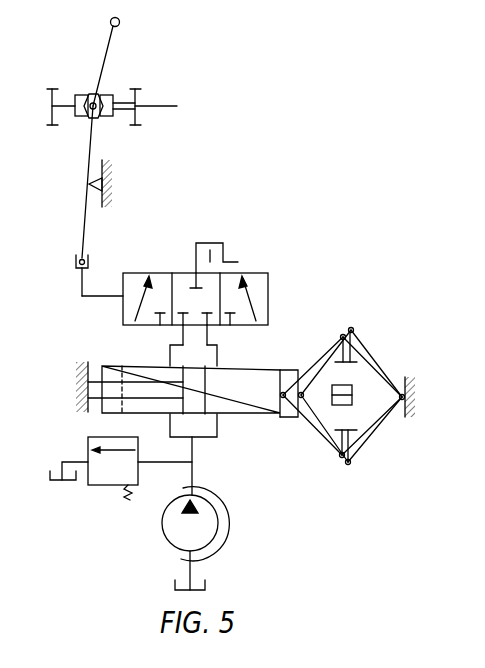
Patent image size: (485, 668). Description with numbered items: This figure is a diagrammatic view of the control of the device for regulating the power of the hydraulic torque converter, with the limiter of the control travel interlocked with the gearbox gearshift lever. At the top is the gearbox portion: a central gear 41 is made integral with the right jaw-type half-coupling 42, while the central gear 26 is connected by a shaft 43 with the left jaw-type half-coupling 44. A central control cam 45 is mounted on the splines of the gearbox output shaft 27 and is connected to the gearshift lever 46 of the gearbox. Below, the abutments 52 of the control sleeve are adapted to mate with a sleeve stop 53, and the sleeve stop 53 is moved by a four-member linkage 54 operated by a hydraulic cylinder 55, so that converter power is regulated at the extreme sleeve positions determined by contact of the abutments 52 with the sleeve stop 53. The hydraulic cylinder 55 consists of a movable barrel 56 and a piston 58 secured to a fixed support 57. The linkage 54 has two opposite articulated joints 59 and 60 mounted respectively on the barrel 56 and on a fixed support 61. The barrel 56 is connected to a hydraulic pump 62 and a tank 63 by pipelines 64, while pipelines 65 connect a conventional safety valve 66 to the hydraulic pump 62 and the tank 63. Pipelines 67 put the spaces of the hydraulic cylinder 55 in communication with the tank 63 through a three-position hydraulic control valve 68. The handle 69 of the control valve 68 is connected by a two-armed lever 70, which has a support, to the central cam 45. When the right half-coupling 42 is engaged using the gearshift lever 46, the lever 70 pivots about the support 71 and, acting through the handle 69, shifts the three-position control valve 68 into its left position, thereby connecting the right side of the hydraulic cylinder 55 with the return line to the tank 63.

The central gear 26 is at (52, 127).
The gearbox output shaft 27 is at (150, 104).
The central gear 41 is at (140, 120).
The jaw-type half-coupling 42 is at (107, 117).
The shaft 43 is at (58, 100).
The jaw-type half-coupling 44 is at (80, 95).
The central control cam 45 is at (97, 96).
The gearshift lever 46 is at (110, 23).
The abutments 52 is at (335, 388).
The sleeve stop 53 is at (340, 432).
The four-member linkage 54 is at (374, 434).
The hydraulic cylinder 55 is at (262, 422).
The movable barrel 56 is at (233, 417).
The fixed support 57 is at (90, 362).
The piston 58 is at (188, 407).
The articulated joint 59 is at (284, 400).
The articulated joint 60 is at (402, 401).
The fixed support 61 is at (408, 376).
The hydraulic pump 62 is at (163, 540).
The tank 63 is at (238, 255).
The pipelines 64 is at (214, 524).
The pipelines 65 is at (67, 458).
The safety valve 66 is at (98, 486).
The pipelines 67 is at (196, 254).
The three-position hydraulic control valve 68 is at (258, 273).
The handle 69 is at (80, 286).
The lever 70 is at (88, 235).
The support 71 is at (92, 189).